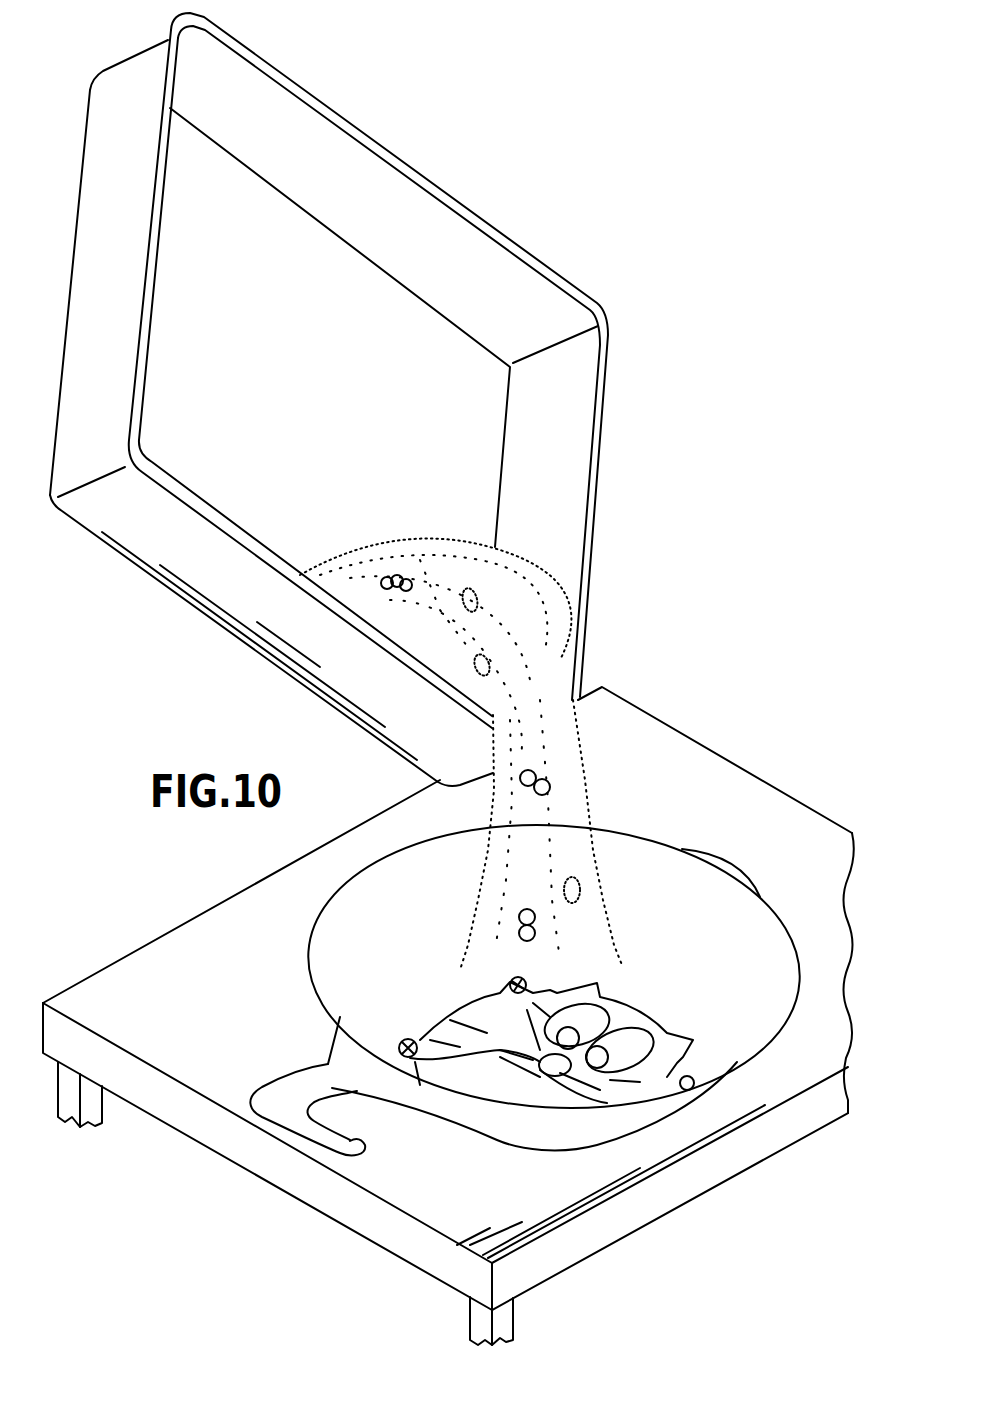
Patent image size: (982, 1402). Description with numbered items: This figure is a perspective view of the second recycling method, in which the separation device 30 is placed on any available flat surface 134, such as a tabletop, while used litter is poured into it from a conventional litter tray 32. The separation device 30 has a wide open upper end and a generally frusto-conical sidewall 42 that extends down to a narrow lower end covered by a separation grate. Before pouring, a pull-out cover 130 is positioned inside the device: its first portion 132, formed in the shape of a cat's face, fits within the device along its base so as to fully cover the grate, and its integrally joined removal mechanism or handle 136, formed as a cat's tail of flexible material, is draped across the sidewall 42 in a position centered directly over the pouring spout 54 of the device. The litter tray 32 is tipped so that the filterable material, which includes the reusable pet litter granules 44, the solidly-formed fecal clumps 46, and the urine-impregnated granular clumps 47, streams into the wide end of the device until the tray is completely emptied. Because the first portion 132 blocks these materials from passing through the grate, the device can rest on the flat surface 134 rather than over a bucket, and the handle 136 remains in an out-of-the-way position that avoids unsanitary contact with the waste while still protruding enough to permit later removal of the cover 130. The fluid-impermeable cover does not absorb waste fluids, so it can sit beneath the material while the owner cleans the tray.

The litter tray 32 is at (608, 445).
The flat surface 134 is at (787, 815).
The separation device 30 is at (796, 950).
The sidewall 42 is at (533, 1140).
The reusable pet litter granules 44 is at (583, 787).
The fecal clumps 46 is at (550, 793).
The granular clumps 47 is at (580, 898).
The pull-out cover 130 is at (660, 1022).
The first portion 132 is at (450, 1017).
The pouring spout 54 is at (330, 1060).
The removal mechanism or handle 136 is at (357, 1148).